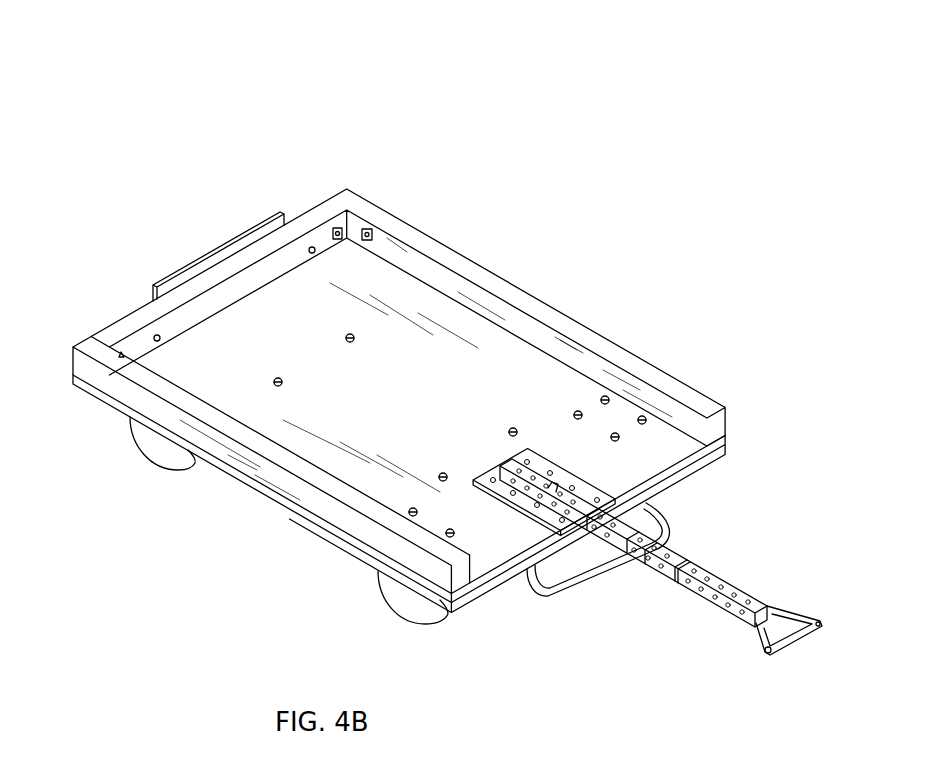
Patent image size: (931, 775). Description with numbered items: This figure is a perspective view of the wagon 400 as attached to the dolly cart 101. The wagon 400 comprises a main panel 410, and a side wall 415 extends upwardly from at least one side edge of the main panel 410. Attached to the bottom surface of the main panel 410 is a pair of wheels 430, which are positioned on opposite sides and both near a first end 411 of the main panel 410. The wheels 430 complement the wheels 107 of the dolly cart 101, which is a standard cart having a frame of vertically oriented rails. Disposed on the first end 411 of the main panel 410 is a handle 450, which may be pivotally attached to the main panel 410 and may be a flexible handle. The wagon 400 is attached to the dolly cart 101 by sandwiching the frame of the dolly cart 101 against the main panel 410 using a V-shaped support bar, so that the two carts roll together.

The wagon 400 is at (680, 160).
The main panel 410 is at (393, 277).
The side wall 415 is at (578, 355).
The first end 411 is at (652, 480).
The handle 450 is at (665, 568).
The dolly cart 101 is at (570, 597).
The wheels 107 is at (170, 457).
The wheels 430 is at (400, 605).